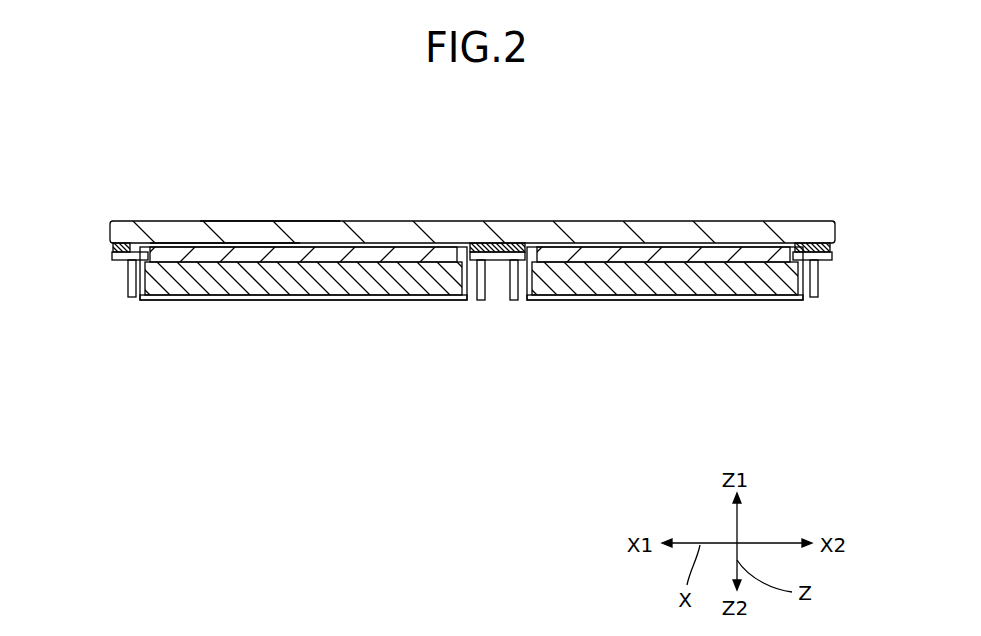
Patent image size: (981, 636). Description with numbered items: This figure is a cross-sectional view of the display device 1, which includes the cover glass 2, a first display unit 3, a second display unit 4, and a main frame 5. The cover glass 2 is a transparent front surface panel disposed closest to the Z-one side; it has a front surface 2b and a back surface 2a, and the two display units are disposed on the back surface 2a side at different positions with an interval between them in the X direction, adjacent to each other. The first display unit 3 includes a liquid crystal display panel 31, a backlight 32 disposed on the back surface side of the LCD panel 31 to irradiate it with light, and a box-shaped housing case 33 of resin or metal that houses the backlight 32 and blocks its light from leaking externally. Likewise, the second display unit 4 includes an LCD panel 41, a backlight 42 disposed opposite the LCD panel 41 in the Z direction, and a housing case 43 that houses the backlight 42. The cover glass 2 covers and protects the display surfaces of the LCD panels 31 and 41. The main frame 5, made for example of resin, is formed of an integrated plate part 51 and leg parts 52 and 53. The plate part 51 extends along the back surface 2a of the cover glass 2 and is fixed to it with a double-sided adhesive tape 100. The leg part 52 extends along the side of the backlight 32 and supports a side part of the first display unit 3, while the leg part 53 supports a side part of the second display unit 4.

The display device 1 is at (338, 138).
The cover glass 2 is at (690, 228).
The back surface 2a is at (219, 247).
The front surface 2b is at (268, 221).
The first display unit 3 is at (303, 333).
The liquid crystal display panel 31 is at (345, 263).
The backlight 32 is at (300, 278).
The housing case 33 is at (363, 372).
The second display unit 4 is at (663, 333).
The LCD panel 41 is at (720, 263).
The backlight 42 is at (678, 278).
The housing case 43 is at (742, 372).
The main frame 5 is at (472, 356).
The plate part 51 is at (113, 259).
The leg part 52 is at (138, 300).
The leg part 53 is at (502, 261).
The double-sided adhesive tape 100 is at (114, 246).